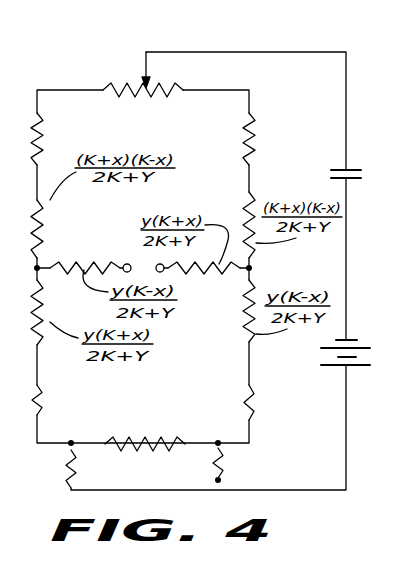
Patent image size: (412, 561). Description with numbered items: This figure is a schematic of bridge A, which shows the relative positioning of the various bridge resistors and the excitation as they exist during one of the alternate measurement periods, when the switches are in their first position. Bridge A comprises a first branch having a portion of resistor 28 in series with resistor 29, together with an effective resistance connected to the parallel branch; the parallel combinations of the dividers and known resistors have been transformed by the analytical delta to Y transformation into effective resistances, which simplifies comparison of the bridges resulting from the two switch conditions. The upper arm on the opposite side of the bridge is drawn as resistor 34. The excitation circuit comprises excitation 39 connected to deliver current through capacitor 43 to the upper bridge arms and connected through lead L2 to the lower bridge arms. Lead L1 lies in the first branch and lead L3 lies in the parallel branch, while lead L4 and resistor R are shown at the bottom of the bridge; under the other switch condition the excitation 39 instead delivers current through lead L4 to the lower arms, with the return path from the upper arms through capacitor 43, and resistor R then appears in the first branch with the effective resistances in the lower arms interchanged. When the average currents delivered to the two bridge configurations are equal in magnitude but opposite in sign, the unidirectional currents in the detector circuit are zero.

The bridge A is at (69, 72).
The resistor 28 is at (155, 99).
The resistor 29 is at (31, 137).
The right bridge arm resistor 34 is at (254, 122).
The capacitor 43 is at (350, 170).
The excitation 39 is at (366, 346).
The lead L1 is at (45, 412).
The lead L2 is at (62, 477).
The lead L3 is at (262, 408).
The lead L4 is at (228, 471).
The resistor R is at (163, 440).